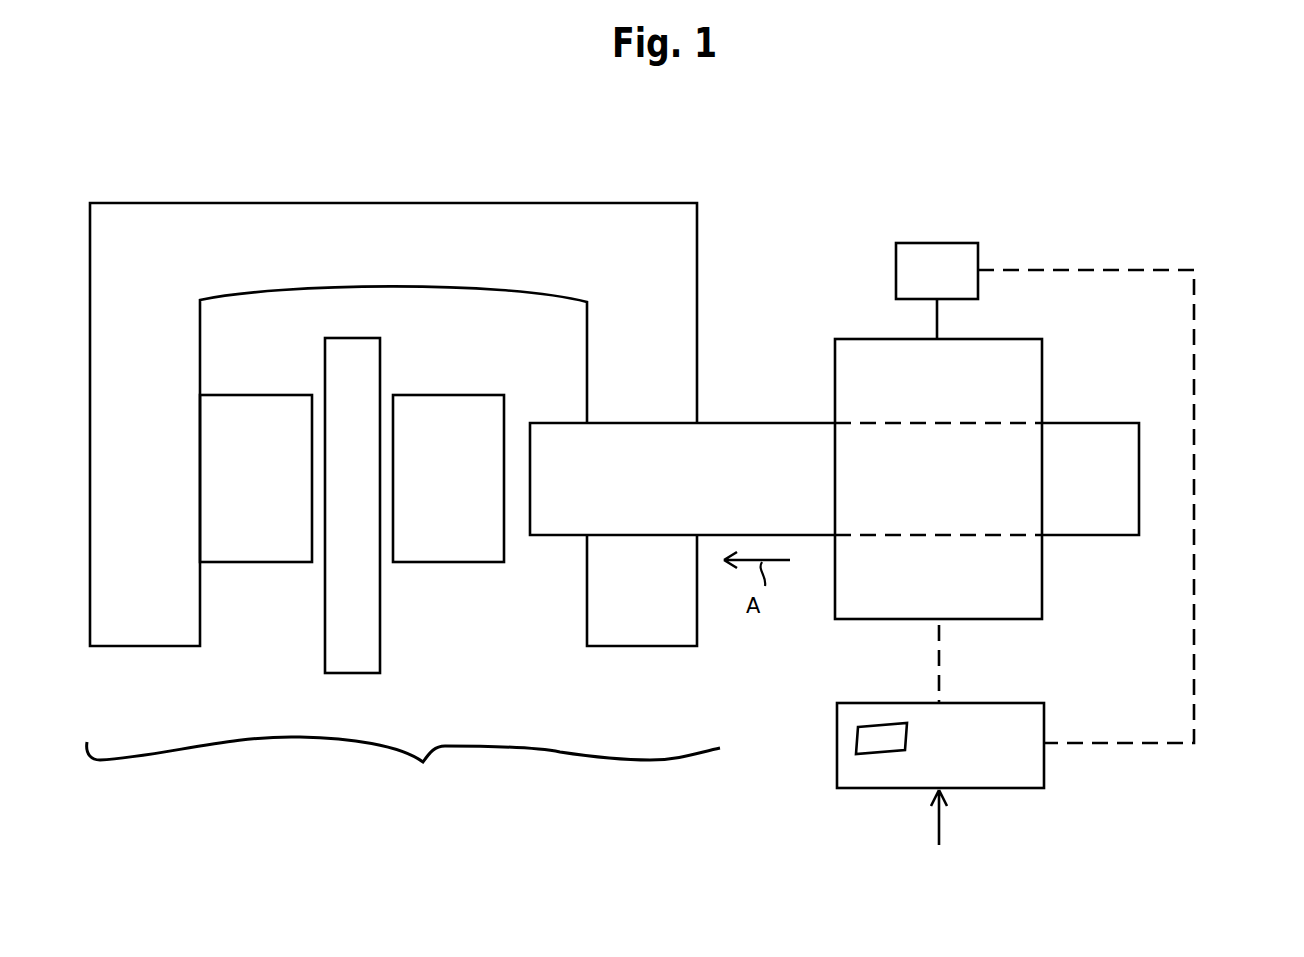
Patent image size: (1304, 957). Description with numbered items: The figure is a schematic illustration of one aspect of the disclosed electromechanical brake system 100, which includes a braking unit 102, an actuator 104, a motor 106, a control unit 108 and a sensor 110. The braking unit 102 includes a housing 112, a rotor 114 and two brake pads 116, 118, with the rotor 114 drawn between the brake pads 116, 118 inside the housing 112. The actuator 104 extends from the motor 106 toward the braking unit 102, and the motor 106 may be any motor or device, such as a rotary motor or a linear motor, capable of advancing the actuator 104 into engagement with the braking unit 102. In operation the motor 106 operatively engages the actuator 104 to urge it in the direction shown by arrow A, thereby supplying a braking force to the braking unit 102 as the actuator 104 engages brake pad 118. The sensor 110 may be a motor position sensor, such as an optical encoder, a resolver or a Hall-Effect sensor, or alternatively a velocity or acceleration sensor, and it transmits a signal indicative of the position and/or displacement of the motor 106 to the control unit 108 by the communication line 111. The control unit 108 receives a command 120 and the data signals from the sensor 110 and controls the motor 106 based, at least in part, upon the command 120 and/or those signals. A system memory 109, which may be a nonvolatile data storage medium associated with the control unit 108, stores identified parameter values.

The electromechanical brake system 100 is at (909, 141).
The braking unit 102 is at (403, 768).
The actuator 104 is at (752, 423).
The motor 106 is at (1044, 374).
The control unit 108 is at (986, 703).
The system memory 109 is at (907, 733).
The sensor 110 is at (942, 243).
The communication line 111 is at (1196, 482).
The housing 112 is at (396, 203).
The rotor 114 is at (382, 349).
The brake pad 116 is at (262, 563).
The brake pad 118 is at (452, 563).
The command 120 is at (941, 824).